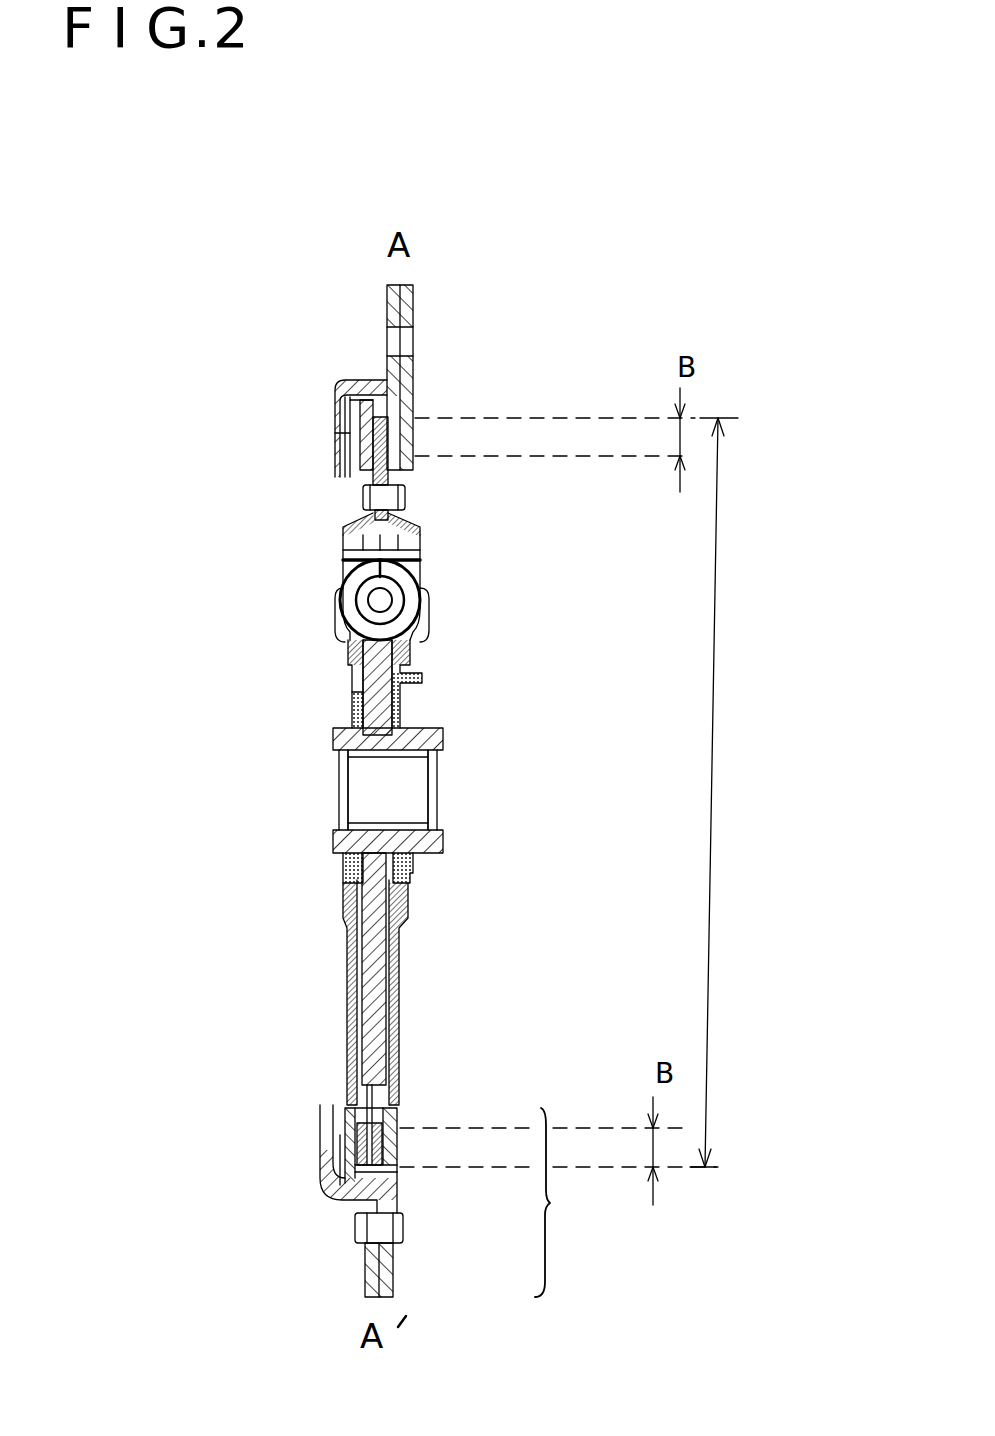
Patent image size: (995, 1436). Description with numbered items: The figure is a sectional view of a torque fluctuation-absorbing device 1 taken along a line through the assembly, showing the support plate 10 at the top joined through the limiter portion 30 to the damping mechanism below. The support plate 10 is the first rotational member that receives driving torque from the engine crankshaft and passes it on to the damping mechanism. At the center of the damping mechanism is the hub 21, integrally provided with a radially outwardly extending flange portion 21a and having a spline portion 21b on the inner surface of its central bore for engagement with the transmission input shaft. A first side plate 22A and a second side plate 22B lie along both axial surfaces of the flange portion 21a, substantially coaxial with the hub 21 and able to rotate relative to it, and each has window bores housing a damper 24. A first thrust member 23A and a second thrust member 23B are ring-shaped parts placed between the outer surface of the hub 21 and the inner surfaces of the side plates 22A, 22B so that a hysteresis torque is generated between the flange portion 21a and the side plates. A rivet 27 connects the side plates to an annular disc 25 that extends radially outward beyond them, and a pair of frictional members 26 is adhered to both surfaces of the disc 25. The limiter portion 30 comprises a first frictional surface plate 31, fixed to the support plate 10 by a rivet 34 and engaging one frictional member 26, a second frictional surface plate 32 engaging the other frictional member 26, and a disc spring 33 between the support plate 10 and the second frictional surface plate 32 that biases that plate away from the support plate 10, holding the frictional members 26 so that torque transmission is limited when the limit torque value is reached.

The torque fluctuation-absorbing device 1 is at (686, 323).
The support plate 10 is at (390, 300).
The hub 21 is at (440, 738).
The flange portion 21a is at (378, 950).
The spline portion 21b is at (400, 757).
The first side plate 22A is at (350, 528).
The second side plate 22B is at (424, 528).
The first thrust member 23A is at (346, 866).
The second thrust member 23B is at (410, 866).
The damper 24 is at (410, 600).
The disc 25 is at (416, 477).
The frictional member 26 is at (366, 430).
The rivet 27 is at (368, 490).
The limiter portion 30 is at (571, 1202).
The first frictional surface plate 31 is at (385, 1268).
The second frictional surface plate 32 is at (356, 1126).
The disc spring 33 is at (337, 1195).
The rivet 34 is at (405, 1230).